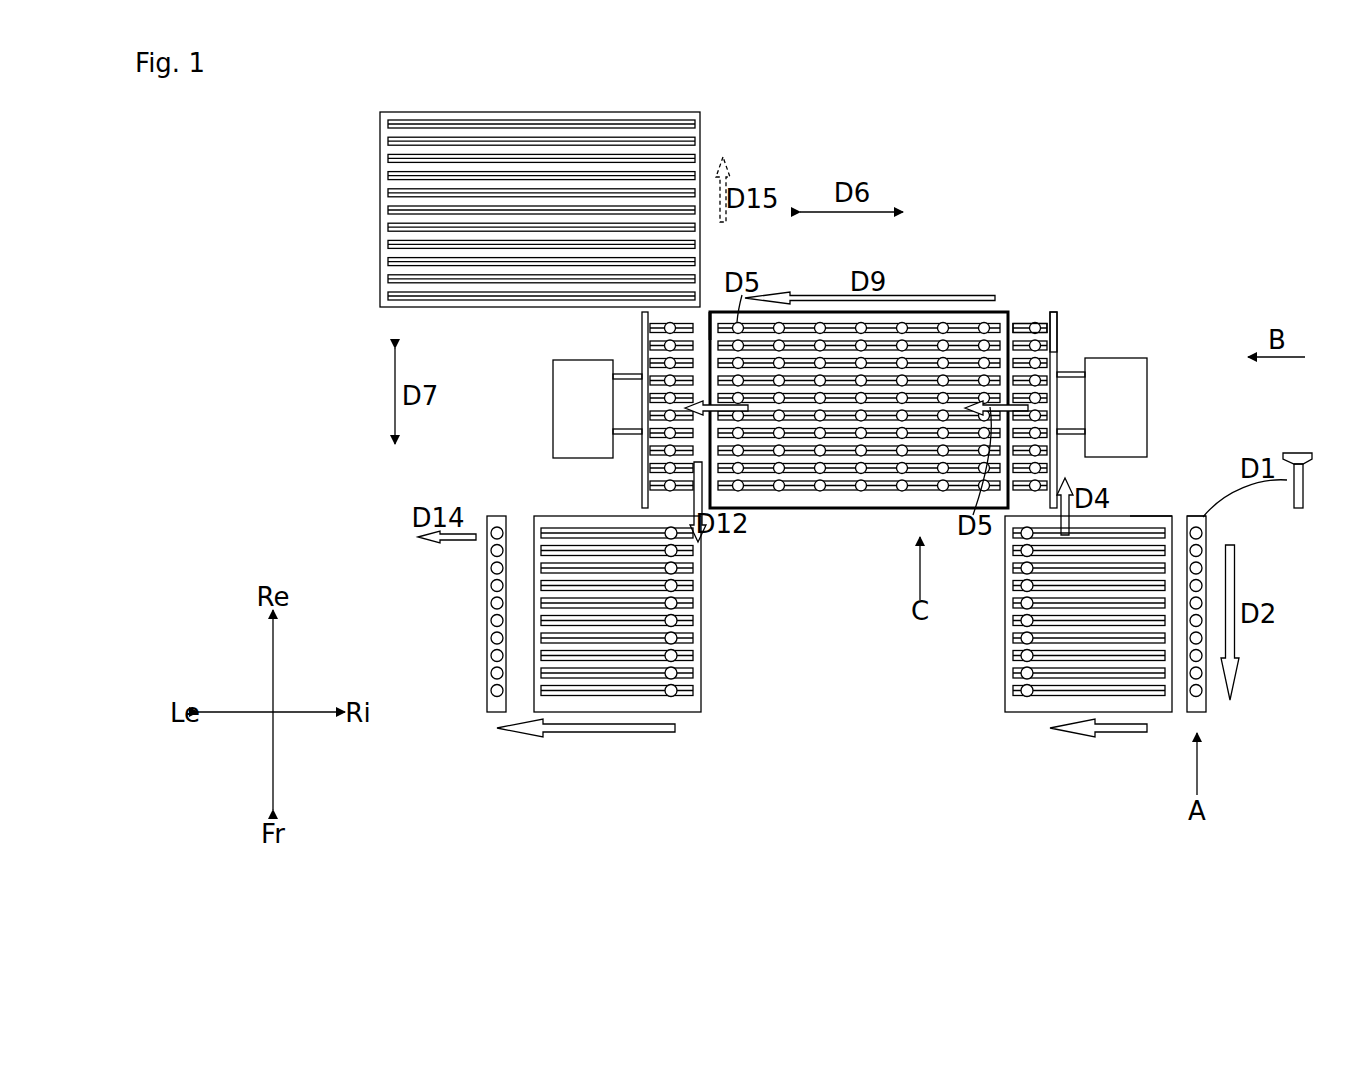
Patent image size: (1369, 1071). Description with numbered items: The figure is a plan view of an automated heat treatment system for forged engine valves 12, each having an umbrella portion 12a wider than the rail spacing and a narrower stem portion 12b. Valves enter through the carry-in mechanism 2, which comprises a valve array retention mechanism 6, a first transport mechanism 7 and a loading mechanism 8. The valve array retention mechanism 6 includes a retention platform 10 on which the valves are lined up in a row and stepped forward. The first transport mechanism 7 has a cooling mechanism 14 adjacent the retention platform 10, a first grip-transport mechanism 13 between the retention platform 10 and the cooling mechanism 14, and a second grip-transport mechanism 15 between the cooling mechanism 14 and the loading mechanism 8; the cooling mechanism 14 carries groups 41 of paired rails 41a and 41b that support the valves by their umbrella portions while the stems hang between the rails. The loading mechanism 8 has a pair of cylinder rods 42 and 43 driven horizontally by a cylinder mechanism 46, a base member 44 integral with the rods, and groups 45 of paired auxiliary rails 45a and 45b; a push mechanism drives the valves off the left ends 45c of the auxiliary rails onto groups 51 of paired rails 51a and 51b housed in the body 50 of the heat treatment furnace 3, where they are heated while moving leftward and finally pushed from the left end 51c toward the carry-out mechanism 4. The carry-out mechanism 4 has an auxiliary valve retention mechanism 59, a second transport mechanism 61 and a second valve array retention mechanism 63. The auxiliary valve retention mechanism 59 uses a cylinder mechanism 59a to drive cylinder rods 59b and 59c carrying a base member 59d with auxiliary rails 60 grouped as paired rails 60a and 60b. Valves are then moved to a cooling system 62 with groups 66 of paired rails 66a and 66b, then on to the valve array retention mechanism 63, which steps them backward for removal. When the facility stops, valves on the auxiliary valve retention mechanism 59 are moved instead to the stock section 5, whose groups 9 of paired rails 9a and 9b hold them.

The carry-in mechanism 2 is at (1213, 718).
The heat treatment furnace 3 is at (856, 402).
The carry-out mechanism 4 is at (627, 667).
The stock section 5 is at (482, 215).
The valve array retention mechanism 6 is at (1197, 598).
The first transport mechanism 7 is at (1024, 639).
The loading mechanism 8 is at (1142, 378).
The groups of paired rails 9 is at (480, 289).
The rail 9a is at (385, 297).
The rail 9b is at (385, 280).
The retention platform 10 is at (1184, 512).
The forged engine valve 12 is at (868, 514).
The umbrella portion 12a is at (1295, 452).
The stem portion 12b is at (1303, 508).
The first grip-transport mechanism 13 is at (1159, 724).
The cooling mechanism 14 is at (1024, 652).
The second grip-transport mechanism 15 is at (1146, 512).
The groups of paired rails 41 is at (1020, 674).
The rail 41a is at (1040, 697).
The rail 41b is at (1012, 690).
The cylinder rod 42 is at (1070, 430).
The cylinder rod 43 is at (1070, 375).
The base member 44 is at (1058, 345).
The groups of auxiliary rails 45 is at (1035, 360).
The auxiliary rail 45a is at (1046, 325).
The auxiliary rail 45b is at (1030, 320).
The left end of auxiliary rails 45c is at (1000, 285).
The cylinder mechanism 46 is at (1147, 370).
The body 50 is at (856, 425).
The groups of paired rails 51 is at (852, 425).
The rail 51a is at (805, 492).
The rail 51b is at (855, 570).
The left end of rails 51c is at (712, 320).
The auxiliary valve retention mechanism 59 is at (540, 407).
The cylinder mechanism 59a is at (553, 420).
The cylinder rod 59b is at (618, 432).
The cylinder rod 59c is at (615, 378).
The base member 59d is at (645, 352).
The auxiliary rails 60 is at (569, 415).
The auxiliary rail 60a is at (645, 496).
The auxiliary rail 60b is at (645, 482).
The second transport mechanism 61 is at (683, 653).
The cooling system 62 is at (601, 718).
The valve array retention mechanism 63 is at (490, 713).
The groups of paired rails 66 is at (686, 674).
The rail 66a is at (663, 697).
The rail 66b is at (690, 686).